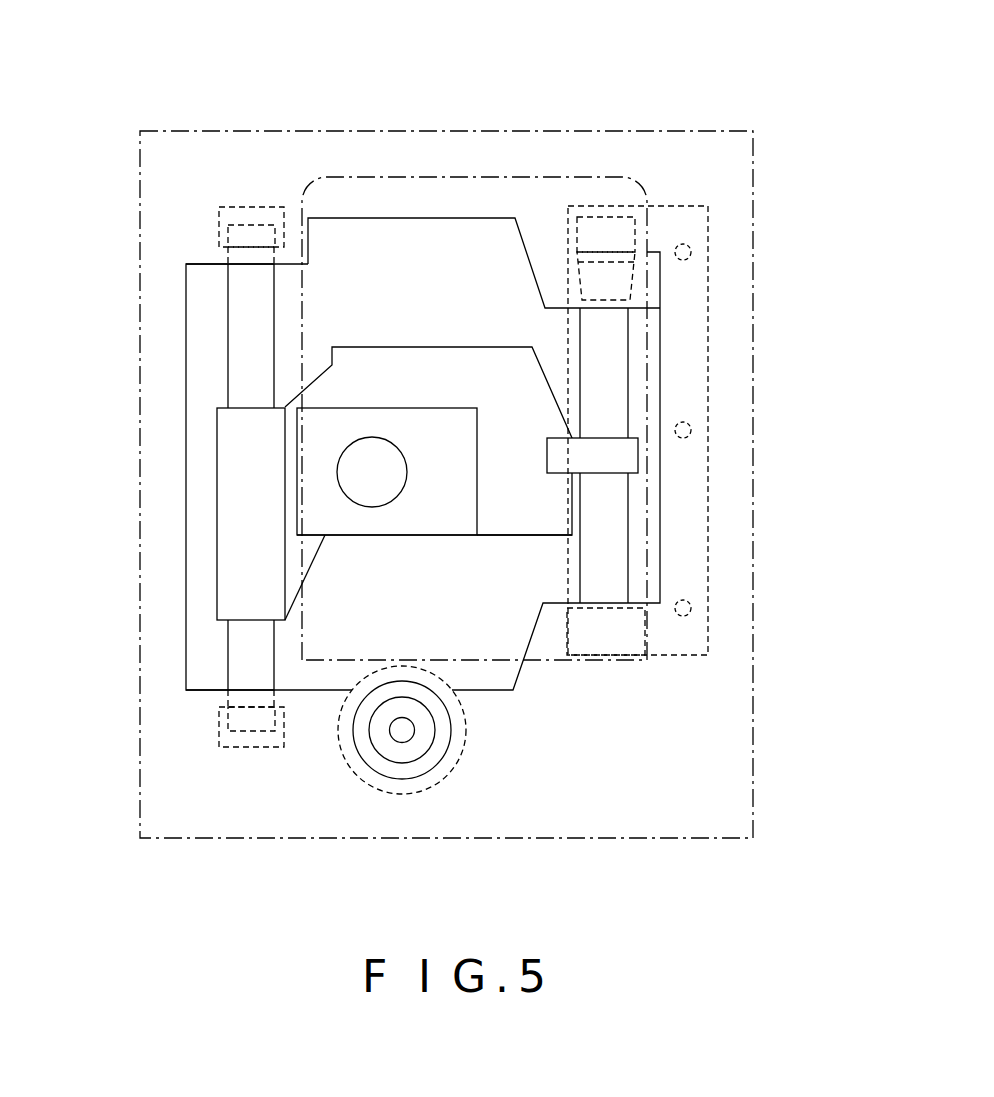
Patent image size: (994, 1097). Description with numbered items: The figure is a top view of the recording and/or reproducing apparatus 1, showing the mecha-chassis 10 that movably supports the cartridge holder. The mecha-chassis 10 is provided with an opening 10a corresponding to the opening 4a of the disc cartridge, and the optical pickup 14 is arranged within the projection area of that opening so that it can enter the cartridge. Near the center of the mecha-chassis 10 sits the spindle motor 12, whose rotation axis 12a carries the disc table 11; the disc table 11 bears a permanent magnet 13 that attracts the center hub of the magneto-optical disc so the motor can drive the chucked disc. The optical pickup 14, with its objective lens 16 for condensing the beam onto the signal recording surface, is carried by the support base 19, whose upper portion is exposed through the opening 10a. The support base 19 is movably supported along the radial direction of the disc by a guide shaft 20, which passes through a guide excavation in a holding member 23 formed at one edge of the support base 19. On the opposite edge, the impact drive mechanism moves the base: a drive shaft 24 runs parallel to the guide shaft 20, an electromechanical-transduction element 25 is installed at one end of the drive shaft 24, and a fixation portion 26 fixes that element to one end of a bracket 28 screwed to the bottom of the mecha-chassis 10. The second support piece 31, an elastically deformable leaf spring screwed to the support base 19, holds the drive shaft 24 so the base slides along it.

The recording and/or reproducing apparatus 1 is at (645, 95).
The mecha-chassis 10 is at (311, 150).
The opening 10a is at (400, 218).
The opening 4a is at (528, 178).
The guide shaft 20 is at (243, 335).
The holding member 23 is at (235, 502).
The optical pickup 14 is at (393, 407).
The objective lens 16 is at (368, 478).
The support base 19 is at (515, 535).
The drive shaft 24 is at (615, 548).
The second support piece 31 is at (617, 460).
The bracket 28 is at (708, 372).
The fixation portion 26 is at (627, 232).
The electromechanical-transduction element 25 is at (625, 280).
The permanent magnet 13 is at (428, 730).
The disc table 11 is at (447, 758).
The spindle motor 12 is at (350, 767).
The rotation axis 12a is at (399, 735).